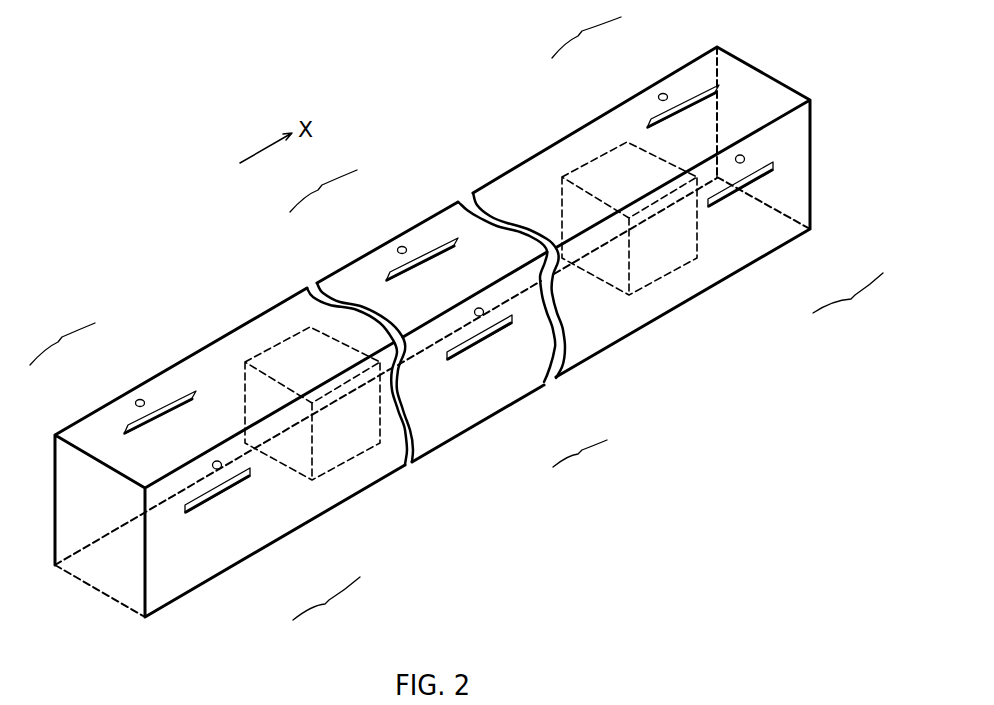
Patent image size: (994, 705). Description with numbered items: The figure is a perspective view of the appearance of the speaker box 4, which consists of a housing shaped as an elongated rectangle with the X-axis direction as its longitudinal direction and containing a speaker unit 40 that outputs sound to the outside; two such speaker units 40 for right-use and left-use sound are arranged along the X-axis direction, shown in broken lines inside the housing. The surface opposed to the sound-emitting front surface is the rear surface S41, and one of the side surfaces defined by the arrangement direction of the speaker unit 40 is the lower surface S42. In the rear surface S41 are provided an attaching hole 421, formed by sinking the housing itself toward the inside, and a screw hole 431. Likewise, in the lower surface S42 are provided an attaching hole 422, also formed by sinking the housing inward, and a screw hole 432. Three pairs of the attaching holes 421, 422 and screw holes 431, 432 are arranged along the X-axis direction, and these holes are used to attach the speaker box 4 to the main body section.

The speaker box 4 is at (778, 34).
The speaker unit 40 is at (273, 343).
The attaching hole 421 is at (174, 387).
The attaching hole 422 is at (204, 510).
The screw hole 431 is at (125, 397).
The screw hole 432 is at (231, 469).
The rear surface S41 is at (334, 275).
The lower surface S42 is at (444, 427).